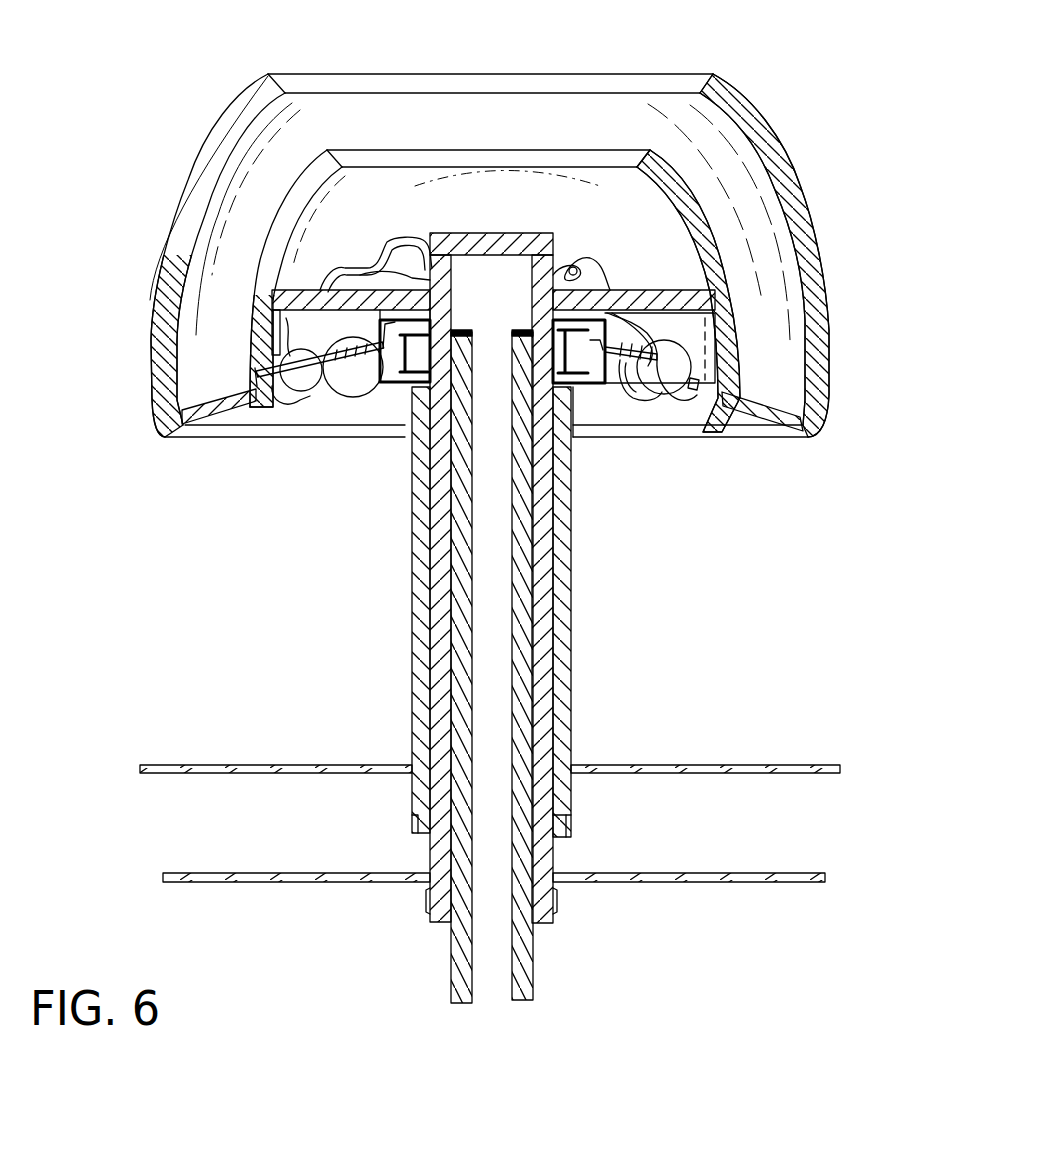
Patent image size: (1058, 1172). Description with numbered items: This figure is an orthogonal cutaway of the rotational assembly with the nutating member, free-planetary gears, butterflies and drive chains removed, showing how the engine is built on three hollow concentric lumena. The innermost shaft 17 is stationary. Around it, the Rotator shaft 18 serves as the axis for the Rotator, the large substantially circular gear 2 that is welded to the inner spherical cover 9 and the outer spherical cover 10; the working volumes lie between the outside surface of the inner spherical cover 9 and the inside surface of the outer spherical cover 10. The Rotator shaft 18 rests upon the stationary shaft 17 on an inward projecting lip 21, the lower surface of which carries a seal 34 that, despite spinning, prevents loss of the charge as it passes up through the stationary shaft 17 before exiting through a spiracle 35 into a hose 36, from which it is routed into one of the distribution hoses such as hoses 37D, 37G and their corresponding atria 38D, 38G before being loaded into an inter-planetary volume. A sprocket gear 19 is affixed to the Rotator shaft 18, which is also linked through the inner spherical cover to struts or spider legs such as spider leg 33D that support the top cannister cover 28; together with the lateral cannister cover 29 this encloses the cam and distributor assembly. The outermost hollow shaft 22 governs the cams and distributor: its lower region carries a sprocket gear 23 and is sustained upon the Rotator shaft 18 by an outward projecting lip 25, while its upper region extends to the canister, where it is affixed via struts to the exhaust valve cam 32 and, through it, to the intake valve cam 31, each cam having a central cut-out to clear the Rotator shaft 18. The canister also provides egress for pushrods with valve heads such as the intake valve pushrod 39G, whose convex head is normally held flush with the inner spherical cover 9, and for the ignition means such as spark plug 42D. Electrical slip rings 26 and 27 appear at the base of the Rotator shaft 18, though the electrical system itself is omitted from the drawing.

The outer spherical cover 10 is at (497, 72).
The inner spherical cover 9 is at (595, 150).
The Rotator 2 is at (235, 398).
The strut or spider leg 33D is at (357, 298).
The inward projecting lip 21 is at (457, 330).
The Rotator shaft 18 is at (543, 580).
The stationary shaft 17 is at (527, 523).
The outermost hollow shaft 22 is at (565, 613).
The sprocket gear 23 is at (768, 770).
The sprocket gear 19 is at (752, 873).
The outward projecting lip 25 is at (572, 823).
The electrical slip ring 26 is at (430, 892).
The electrical slip ring 27 is at (557, 908).
The exhaust valve cam 32 is at (580, 392).
The intake valve cam 31 is at (577, 387).
The distribution hose 37G is at (307, 362).
The atrium 38G is at (303, 392).
The pushrod with intake valve head 39G is at (345, 360).
The hose 36 is at (388, 268).
The spiracle 35 is at (445, 268).
The seal 34 is at (460, 335).
The distribution hose 37D is at (668, 372).
The atrium 38D is at (687, 370).
The spark plug 42D is at (699, 384).
The top cannister cover 28 is at (628, 376).
The lateral cannister cover 29 is at (590, 387).